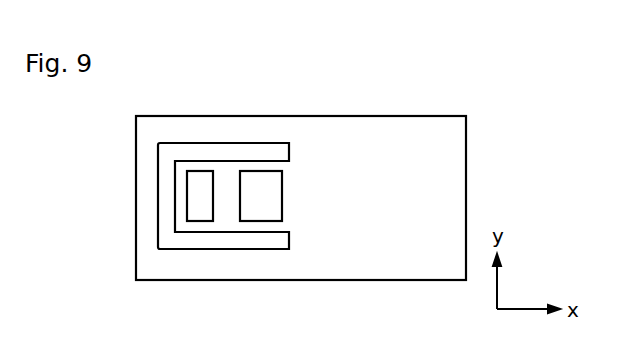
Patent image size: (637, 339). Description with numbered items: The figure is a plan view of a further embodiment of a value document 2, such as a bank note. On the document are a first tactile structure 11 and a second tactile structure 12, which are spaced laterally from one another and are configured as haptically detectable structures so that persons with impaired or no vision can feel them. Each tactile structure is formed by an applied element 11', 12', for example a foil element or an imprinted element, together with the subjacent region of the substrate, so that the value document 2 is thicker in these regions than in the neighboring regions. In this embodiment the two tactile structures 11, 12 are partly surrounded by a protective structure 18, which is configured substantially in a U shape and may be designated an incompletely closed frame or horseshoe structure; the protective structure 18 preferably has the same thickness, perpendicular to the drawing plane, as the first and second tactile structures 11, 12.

The value document 2 is at (386, 263).
The first tactile structure 11 is at (180, 249).
The foil element of the first tactile structure 11' is at (206, 245).
The second tactile structure 12 is at (281, 249).
The foil element of the second tactile structure 12' is at (261, 245).
The protective structure 18 is at (290, 241).